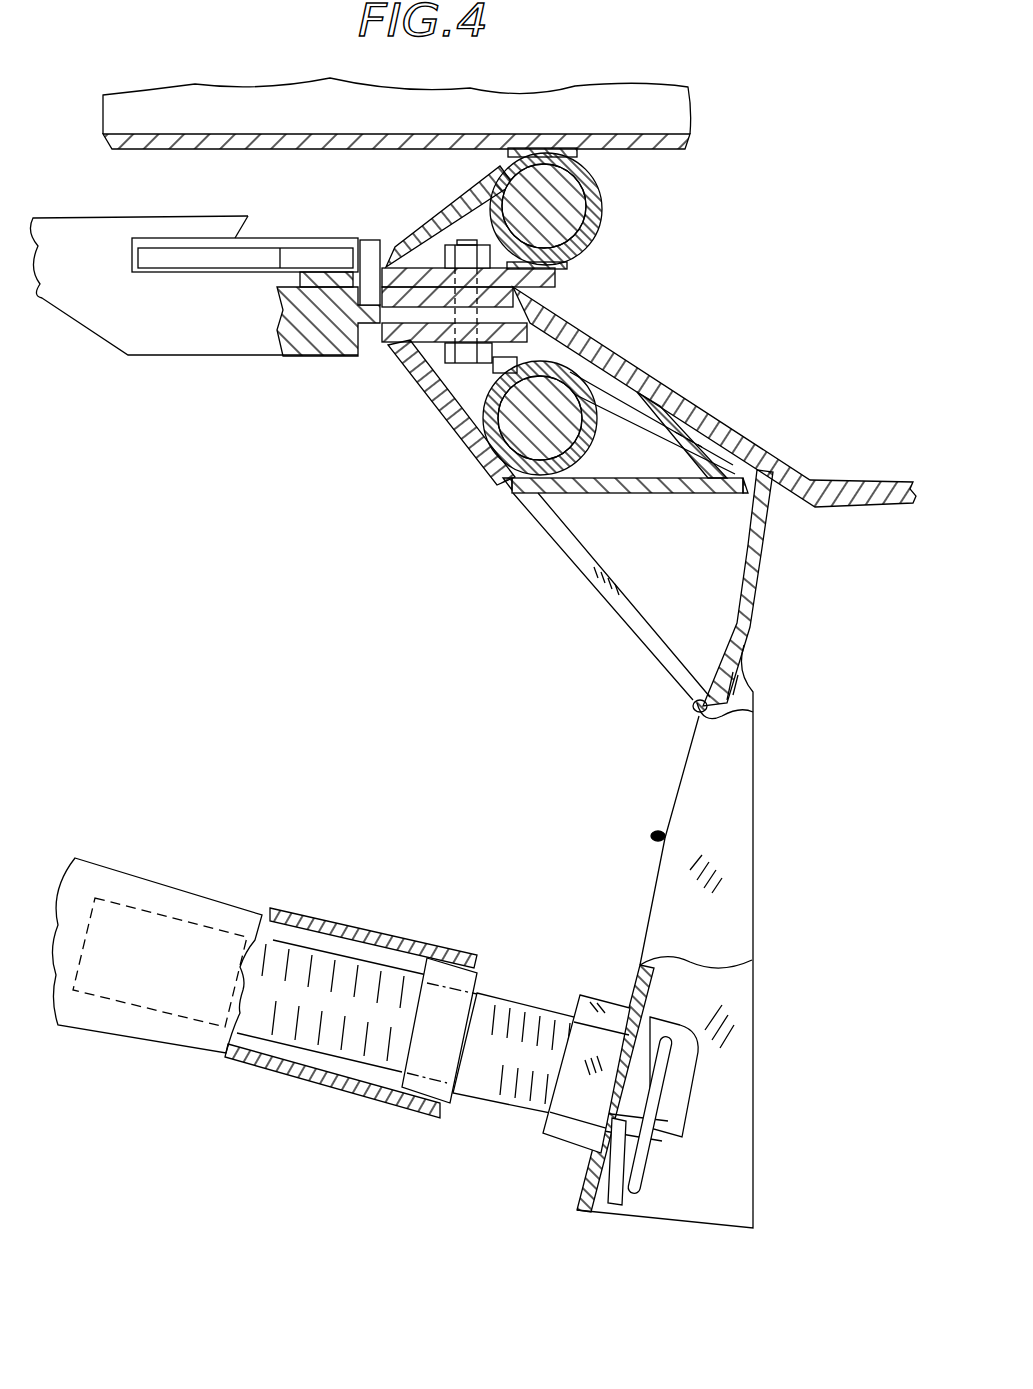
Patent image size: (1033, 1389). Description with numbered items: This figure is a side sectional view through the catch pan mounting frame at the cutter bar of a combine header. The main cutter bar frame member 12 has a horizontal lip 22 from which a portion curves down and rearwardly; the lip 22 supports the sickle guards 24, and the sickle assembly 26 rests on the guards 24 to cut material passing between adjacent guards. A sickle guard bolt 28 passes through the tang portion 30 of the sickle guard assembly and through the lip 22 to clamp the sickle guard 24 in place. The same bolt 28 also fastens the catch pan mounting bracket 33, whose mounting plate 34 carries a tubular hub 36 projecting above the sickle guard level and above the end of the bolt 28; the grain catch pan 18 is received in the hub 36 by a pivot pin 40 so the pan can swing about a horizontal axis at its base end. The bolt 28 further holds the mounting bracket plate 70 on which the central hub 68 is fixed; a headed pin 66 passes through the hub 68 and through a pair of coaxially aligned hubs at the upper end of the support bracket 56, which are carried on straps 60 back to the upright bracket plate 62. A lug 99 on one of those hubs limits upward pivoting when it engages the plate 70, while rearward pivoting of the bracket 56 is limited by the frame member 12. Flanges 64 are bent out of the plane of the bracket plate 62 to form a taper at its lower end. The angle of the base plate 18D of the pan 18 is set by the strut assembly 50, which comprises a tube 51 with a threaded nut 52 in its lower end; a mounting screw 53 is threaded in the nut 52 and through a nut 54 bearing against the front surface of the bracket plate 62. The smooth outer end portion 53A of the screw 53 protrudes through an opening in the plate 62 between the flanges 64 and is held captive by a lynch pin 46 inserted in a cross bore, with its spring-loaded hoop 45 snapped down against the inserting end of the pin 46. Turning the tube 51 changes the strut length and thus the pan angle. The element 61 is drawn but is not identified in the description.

The grain catch pan 18 is at (397, 106).
The base plate 18D is at (218, 152).
The catch pan mounting bracket 33 is at (537, 186).
The mounting plate 34 is at (378, 268).
The sickle guard bolt 28 is at (450, 222).
The sickle assembly 26 is at (312, 258).
The tubular hub 36 is at (589, 209).
The pivot pin 40 is at (558, 217).
The sickle guard 24 is at (155, 337).
The horizontal lip 22 is at (380, 325).
The tang portion 30 is at (433, 335).
The lug 99 is at (515, 378).
The headed pin 66 is at (605, 383).
The main cutter bar frame member 12 is at (660, 400).
The spring clip 61 is at (667, 420).
The mounting bracket plate 70 is at (490, 376).
The central hub 68 is at (628, 480).
The straps 60 is at (560, 540).
The support bracket 56 is at (655, 835).
The strut assembly 50 is at (360, 910).
The mounting screw 53 is at (507, 1020).
The nut 54 is at (597, 1000).
The flanges 64 is at (730, 888).
The bracket plate 62 is at (655, 987).
The outer end portion 53A is at (680, 1067).
The tube 51 is at (165, 1030).
The threaded nut 52 is at (427, 1040).
The lynch pin 46 is at (612, 1183).
The spring-loaded hoop 45 is at (650, 1165).